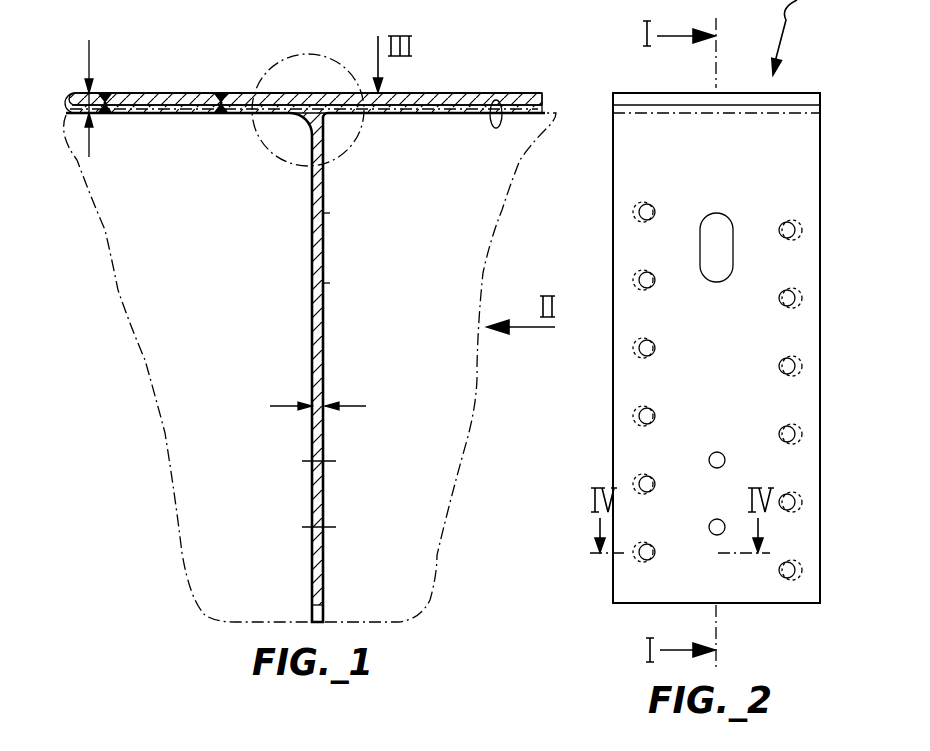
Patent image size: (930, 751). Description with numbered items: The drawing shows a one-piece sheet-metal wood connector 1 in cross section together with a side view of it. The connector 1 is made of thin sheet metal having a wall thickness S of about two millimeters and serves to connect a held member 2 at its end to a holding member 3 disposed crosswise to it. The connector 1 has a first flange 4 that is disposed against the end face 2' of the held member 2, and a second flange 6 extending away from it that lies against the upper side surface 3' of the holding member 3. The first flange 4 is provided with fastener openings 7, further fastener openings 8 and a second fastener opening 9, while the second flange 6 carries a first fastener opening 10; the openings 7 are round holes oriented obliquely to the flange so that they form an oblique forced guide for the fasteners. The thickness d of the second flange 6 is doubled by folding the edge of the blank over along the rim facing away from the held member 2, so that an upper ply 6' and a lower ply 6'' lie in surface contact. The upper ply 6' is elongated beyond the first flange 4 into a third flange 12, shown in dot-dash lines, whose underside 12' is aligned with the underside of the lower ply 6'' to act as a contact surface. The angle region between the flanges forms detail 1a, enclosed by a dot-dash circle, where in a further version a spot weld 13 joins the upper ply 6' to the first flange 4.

In FIG. 1, the connector 1 is at (416, 85).
In FIG. 1, the detail 1a is at (355, 115).
In FIG. 1, the held member 2 is at (440, 367).
In FIG. 1, the end face 2' is at (363, 365).
In FIG. 1, the holding member 3 is at (188, 368).
In FIG. 1, the upper side surface 3' is at (294, 140).
In FIG. 1, the first flange 4 is at (313, 305).
In FIG. 2, the first flange 4 is at (778, 137).
In FIG. 1, the second flange 6 is at (310, 61).
In FIG. 1, the upper ply 6' is at (265, 65).
In FIG. 1, the lower ply 6'' is at (304, 140).
In FIG. 2, the fastener openings 7 is at (646, 204).
In FIG. 2, the fastener openings 8 is at (717, 452).
In FIG. 2, the second fastener opening 9 is at (710, 228).
In FIG. 1, the first fastener opening 10 is at (155, 100).
In FIG. 1, the third flange 12 is at (469, 64).
In FIG. 2, the third flange 12 is at (716, 67).
In FIG. 1, the underside 12' is at (516, 80).
In FIG. 1, the spot weld 13 is at (106, 93).
In FIG. 1, the thickness d is at (89, 48).
In FIG. 1, the wall thickness s is at (353, 406).